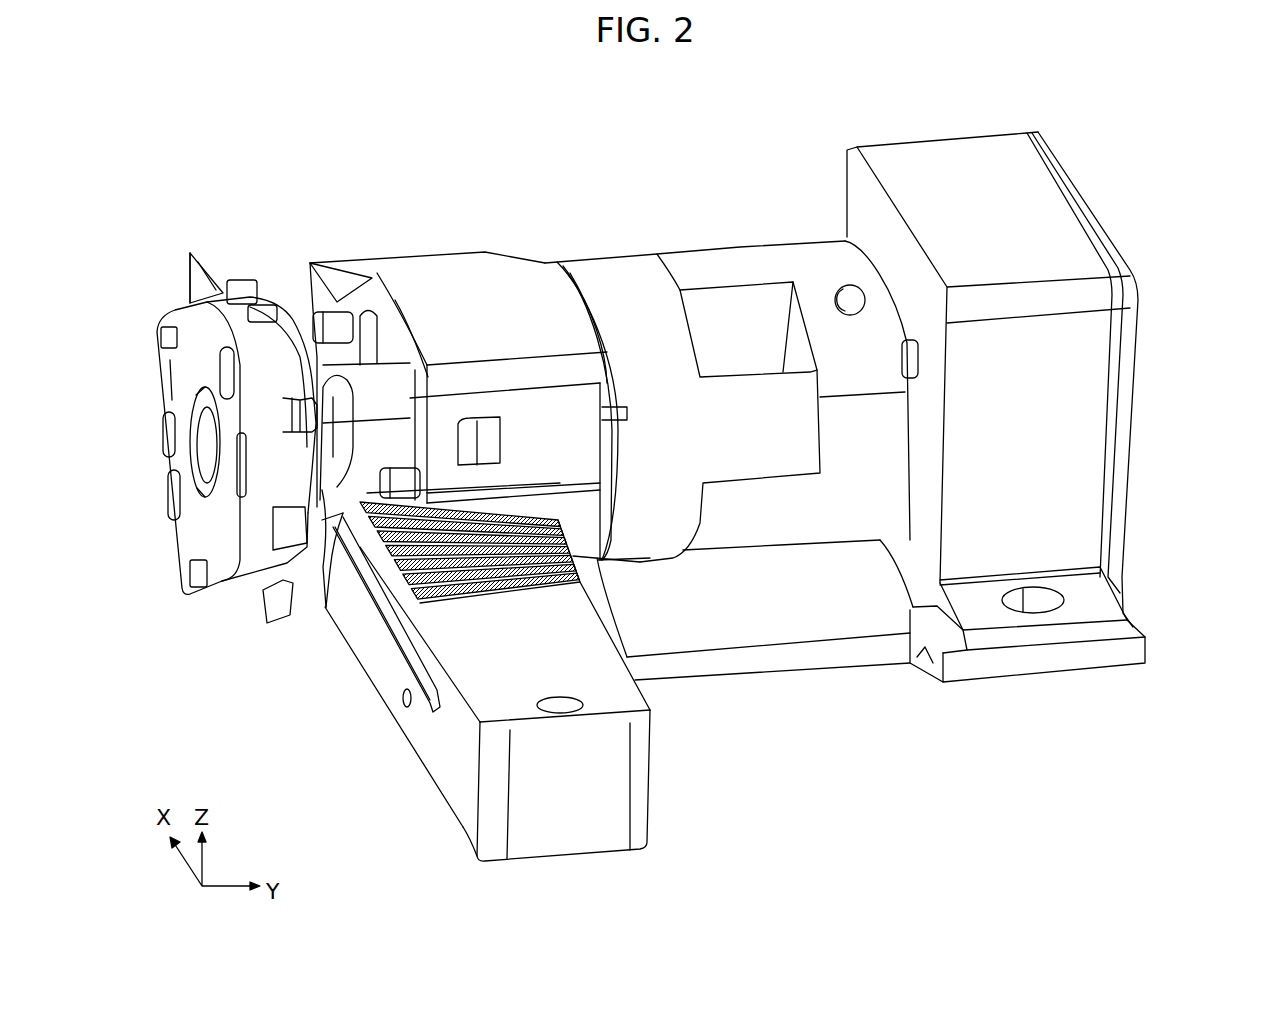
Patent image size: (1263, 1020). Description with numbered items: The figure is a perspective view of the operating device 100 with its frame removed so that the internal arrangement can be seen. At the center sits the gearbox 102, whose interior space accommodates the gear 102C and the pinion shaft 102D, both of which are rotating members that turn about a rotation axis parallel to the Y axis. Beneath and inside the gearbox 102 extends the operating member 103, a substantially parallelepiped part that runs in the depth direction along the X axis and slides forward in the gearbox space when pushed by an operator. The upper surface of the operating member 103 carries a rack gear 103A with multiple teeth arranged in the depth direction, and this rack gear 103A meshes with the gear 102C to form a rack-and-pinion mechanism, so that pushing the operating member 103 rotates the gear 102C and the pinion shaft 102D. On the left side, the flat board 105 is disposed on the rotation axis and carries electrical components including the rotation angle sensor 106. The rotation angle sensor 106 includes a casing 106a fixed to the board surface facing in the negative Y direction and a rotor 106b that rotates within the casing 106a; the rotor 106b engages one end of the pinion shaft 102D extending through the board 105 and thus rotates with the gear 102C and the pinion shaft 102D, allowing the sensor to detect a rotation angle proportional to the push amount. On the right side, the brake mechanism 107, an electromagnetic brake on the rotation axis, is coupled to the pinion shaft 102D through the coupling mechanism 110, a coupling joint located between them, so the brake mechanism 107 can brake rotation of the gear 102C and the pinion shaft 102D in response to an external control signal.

The operating device 100 is at (1247, 54).
The gearbox 102 is at (517, 286).
The gear 102C is at (373, 380).
The pinion shaft 102D is at (328, 610).
The operating member 103 is at (575, 845).
The rack gear 103A is at (538, 602).
The board 105 is at (199, 253).
The rotation angle sensor 106 is at (153, 276).
The casing 106a is at (176, 388).
The rotor 106b is at (200, 438).
The brake mechanism 107 is at (961, 150).
The coupling mechanism 110 is at (727, 252).